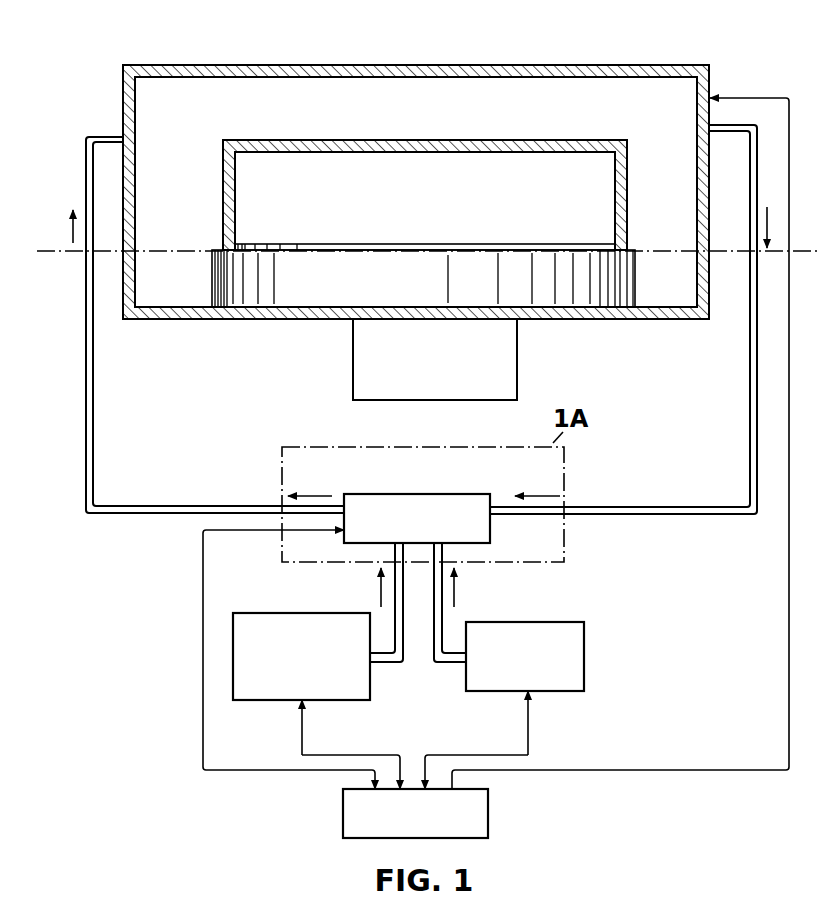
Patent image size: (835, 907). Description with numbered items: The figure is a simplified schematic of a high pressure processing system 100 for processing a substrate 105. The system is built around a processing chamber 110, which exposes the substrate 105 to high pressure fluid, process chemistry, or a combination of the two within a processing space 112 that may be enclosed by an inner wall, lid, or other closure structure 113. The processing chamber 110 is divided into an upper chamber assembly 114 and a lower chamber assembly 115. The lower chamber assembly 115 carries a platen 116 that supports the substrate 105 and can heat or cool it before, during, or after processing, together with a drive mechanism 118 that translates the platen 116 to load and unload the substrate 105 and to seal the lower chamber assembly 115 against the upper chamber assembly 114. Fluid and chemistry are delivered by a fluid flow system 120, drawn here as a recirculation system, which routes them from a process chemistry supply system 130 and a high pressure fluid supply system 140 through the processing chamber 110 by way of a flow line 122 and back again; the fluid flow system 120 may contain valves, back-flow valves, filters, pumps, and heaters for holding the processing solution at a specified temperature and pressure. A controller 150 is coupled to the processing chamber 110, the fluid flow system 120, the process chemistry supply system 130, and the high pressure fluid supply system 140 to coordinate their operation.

The high pressure processing system 100 is at (532, 43).
The processing chamber 110 is at (640, 65).
The closure structure 113 is at (508, 140).
The processing space 112 is at (449, 190).
The substrate 105 is at (467, 245).
The platen 116 is at (630, 263).
The drive mechanism 118 is at (449, 372).
The upper chamber assembly 114 is at (78, 193).
The lower chamber assembly 115 is at (78, 297).
The fluid flow system 120 is at (425, 494).
The flow line 122 is at (192, 505).
The process chemistry supply system 130 is at (282, 613).
The high pressure fluid supply system 140 is at (543, 622).
The controller 150 is at (488, 813).